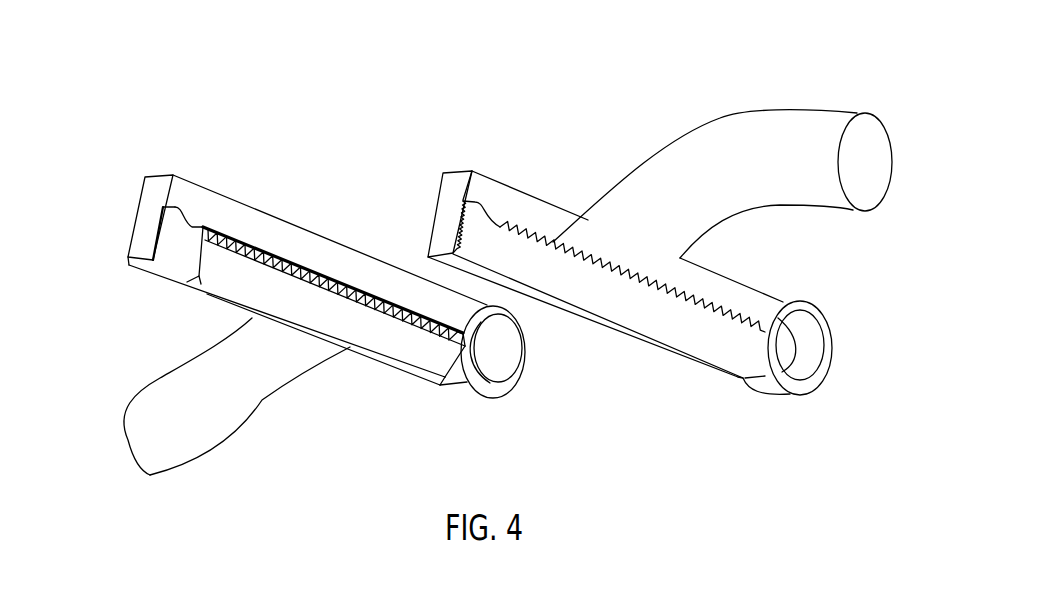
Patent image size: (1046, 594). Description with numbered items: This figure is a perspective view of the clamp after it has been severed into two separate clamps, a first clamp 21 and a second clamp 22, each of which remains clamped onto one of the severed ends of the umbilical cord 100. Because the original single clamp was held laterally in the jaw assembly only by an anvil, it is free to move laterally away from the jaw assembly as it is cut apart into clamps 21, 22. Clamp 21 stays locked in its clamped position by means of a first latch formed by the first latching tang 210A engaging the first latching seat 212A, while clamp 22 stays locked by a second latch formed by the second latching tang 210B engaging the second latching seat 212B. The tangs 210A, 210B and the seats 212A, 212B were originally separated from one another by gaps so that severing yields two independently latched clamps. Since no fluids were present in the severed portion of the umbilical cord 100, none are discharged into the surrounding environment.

The umbilical cord 100 is at (845, 112).
The first separated clamp 21 is at (612, 220).
The second separated clamp 22 is at (284, 221).
The first latching tang 210A is at (453, 193).
The second latching tang 210B is at (148, 222).
The first latching seat 212A is at (542, 273).
The second latching seat 212B is at (180, 251).